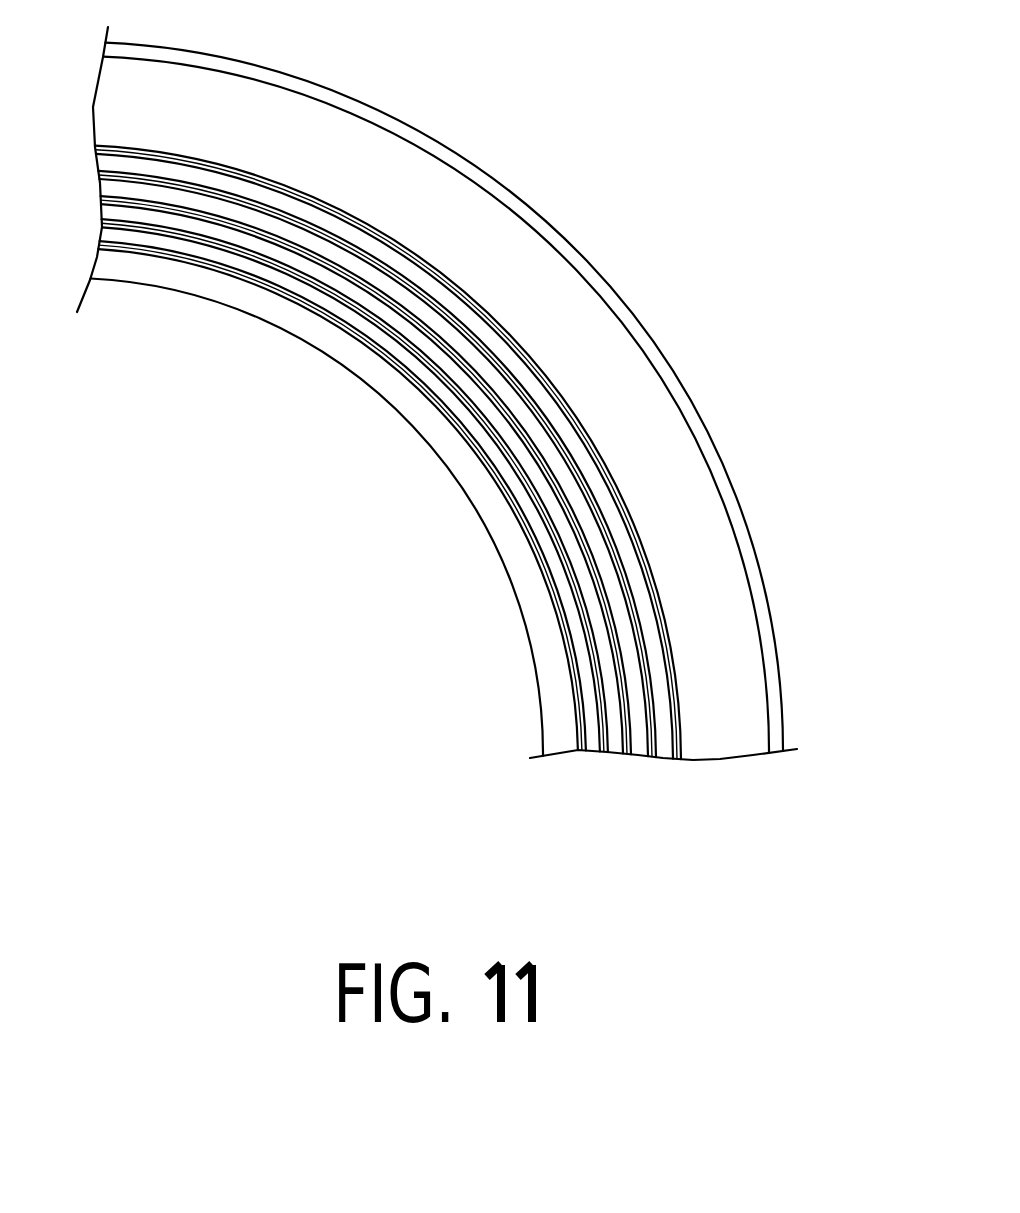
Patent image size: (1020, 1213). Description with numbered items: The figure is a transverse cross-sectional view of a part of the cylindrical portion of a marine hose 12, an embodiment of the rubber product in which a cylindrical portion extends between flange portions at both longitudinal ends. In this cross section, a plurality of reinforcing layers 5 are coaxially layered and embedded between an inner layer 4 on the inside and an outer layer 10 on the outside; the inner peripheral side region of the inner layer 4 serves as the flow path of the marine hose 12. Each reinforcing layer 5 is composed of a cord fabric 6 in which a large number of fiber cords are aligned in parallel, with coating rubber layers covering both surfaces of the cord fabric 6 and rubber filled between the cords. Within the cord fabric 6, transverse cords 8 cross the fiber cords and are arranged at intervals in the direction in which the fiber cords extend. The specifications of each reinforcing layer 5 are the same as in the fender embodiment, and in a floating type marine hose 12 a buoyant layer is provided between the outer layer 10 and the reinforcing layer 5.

The inner layer 4 is at (386, 398).
The reinforcing layer 5 is at (388, 512).
The cord fabric 6 is at (252, 270).
The transverse cord 8 is at (212, 243).
The outer layer 10 is at (610, 300).
The marine hose 12 is at (543, 163).